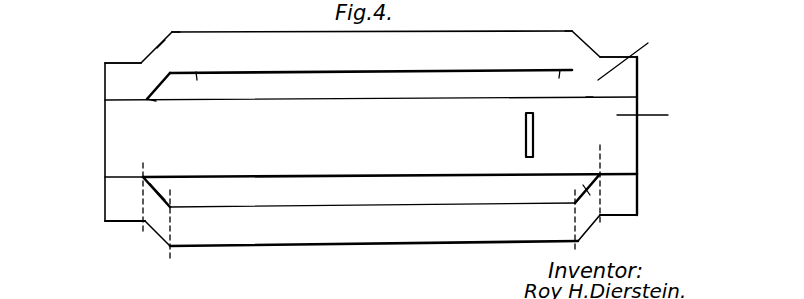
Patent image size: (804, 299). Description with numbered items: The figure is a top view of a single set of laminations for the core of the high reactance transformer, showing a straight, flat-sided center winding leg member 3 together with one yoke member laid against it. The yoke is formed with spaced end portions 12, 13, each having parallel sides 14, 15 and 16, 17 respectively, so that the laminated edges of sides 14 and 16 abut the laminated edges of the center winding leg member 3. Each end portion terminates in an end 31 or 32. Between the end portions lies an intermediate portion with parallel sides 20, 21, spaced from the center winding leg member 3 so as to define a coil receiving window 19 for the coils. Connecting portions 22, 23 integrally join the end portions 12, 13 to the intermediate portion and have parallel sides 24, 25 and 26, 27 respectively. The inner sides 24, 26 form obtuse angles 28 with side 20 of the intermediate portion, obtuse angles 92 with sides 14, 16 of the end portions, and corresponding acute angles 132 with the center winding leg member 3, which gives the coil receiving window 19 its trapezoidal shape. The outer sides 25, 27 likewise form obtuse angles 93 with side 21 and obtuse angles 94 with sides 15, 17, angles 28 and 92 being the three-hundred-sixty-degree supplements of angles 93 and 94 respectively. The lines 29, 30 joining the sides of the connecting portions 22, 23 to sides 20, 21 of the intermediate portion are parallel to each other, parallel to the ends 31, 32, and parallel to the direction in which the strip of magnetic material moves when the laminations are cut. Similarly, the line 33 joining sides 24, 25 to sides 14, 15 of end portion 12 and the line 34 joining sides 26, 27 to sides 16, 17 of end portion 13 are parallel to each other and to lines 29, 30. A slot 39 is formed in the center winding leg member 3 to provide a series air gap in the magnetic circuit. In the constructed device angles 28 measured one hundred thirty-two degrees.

The center winding leg member 3 is at (648, 117).
The end portion 12 is at (114, 83).
The end portion 13 is at (638, 64).
The side 14 is at (118, 176).
The side 15 is at (123, 222).
The side 16 is at (619, 173).
The side 17 is at (623, 217).
The coil receiving window 19 is at (385, 87).
The side 20 is at (273, 72).
The side 21 is at (293, 32).
The connecting portion 22 is at (158, 62).
The connecting portion 23 is at (590, 205).
The side 24 is at (160, 82).
The side 25 is at (156, 51).
The side 26 is at (551, 185).
The side 27 is at (583, 68).
The obtuse angle 28 is at (158, 89).
The line 29 is at (170, 258).
The line 30 is at (575, 221).
The end 31 is at (104, 95).
The end 32 is at (638, 80).
The line 33 is at (144, 233).
The line 34 is at (600, 173).
The slot 39 is at (527, 133).
The obtuse angle 92 is at (155, 102).
The obtuse angle 93 is at (172, 32).
The obtuse angle 94 is at (143, 62).
The acute angle 132 is at (165, 188).